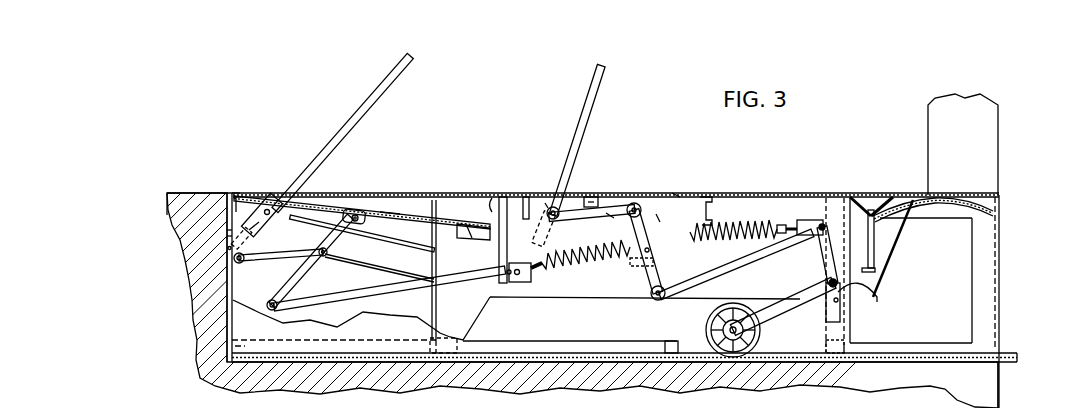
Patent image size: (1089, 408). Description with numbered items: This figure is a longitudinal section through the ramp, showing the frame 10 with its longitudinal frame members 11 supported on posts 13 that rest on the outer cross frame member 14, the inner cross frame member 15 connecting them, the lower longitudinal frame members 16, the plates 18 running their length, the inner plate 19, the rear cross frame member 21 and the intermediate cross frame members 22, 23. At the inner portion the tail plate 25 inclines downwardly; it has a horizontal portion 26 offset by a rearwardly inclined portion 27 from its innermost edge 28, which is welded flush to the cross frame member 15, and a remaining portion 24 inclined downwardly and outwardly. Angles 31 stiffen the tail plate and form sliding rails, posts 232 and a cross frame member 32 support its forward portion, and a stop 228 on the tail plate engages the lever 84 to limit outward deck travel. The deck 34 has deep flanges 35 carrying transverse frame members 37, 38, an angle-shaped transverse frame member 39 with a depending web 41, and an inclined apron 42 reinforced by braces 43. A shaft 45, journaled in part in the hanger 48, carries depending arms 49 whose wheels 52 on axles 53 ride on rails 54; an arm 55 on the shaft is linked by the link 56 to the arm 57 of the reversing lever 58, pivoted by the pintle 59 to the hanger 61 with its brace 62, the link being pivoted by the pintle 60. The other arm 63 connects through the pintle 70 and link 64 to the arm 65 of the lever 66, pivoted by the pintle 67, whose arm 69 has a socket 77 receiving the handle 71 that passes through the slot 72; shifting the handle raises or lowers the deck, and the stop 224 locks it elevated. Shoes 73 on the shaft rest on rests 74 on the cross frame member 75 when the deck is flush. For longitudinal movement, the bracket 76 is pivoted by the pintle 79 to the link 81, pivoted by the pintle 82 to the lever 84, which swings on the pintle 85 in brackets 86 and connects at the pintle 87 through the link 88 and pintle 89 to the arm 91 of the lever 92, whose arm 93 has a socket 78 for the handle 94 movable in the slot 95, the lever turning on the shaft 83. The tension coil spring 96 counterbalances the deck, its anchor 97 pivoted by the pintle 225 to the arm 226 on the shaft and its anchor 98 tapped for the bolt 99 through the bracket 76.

The frame 10 is at (988, 240).
The longitudinal frame members 11 is at (952, 213).
The posts 13 is at (984, 313).
The cross frame member 14 is at (1001, 377).
The inner cross frame member 15 is at (222, 192).
The longitudinal frame members 16 is at (940, 343).
The plates 18 is at (303, 333).
The inner plate 19 is at (222, 259).
The cross frame member 21 is at (228, 354).
The intermediate cross frame member 22 is at (467, 347).
The intermediate cross frame member 23 is at (676, 347).
The remaining portion of tail plate 24 is at (440, 217).
The tail plate 25 is at (407, 210).
The horizontal portion 26 is at (286, 186).
The rearwardly inclined portion 27 is at (247, 193).
The innermost edge 28 is at (232, 193).
The angles 31 is at (392, 213).
The cross frame member 32 is at (468, 217).
The deck 34 is at (752, 193).
The flanges 35 is at (616, 298).
The transverse frame member 37 is at (492, 213).
The transverse frame member 38 is at (713, 197).
The angle-shaped transverse frame member 39 is at (867, 199).
The web 41 is at (877, 248).
The apron 42 is at (943, 197).
The braces 43 is at (908, 200).
The shaft 45 is at (876, 295).
The hanger 48 is at (832, 210).
The depending arms 49 is at (778, 307).
The wheels 52 is at (760, 344).
The axles 53 is at (733, 334).
The rails 54 is at (1008, 357).
The arm 55 is at (836, 279).
The link 56 is at (740, 261).
The arm 57 is at (651, 274).
The reversing lever 58 is at (648, 212).
The pintle 59 is at (650, 249).
The pintle 60 is at (668, 303).
The hanger 61 is at (676, 192).
The brace 62 is at (632, 261).
The arm 63 is at (659, 217).
The link 64 is at (610, 216).
The arm 65 is at (559, 227).
The lever 66 is at (564, 200).
The pintle 67 is at (549, 192).
The arm 69 is at (540, 268).
The pintle 70 is at (631, 210).
The handle 71 is at (580, 131).
The slot 72 is at (525, 197).
The shoes 73 is at (836, 289).
The rests 74 is at (832, 315).
The cross frame member 75 is at (834, 355).
The bracket 76 is at (505, 244).
The socket 77 is at (547, 203).
The socket 78 is at (224, 216).
The pintle 79 is at (524, 282).
The link 81 is at (383, 290).
The pintle 82 is at (273, 311).
The shaft 83 is at (266, 219).
The lever 84 is at (304, 275).
The pintle 85 is at (356, 204).
The brackets 86 is at (348, 205).
The pintle 87 is at (328, 253).
The link 88 is at (265, 256).
The pintle 89 is at (240, 266).
The arm 91 is at (224, 248).
The lever 92 is at (233, 233).
The arm 93 is at (262, 206).
The handle 94 is at (357, 110).
The slot 95 is at (252, 190).
The tension coil spring 96 is at (730, 225).
The spring anchor 97 is at (769, 226).
The spring anchor 98 is at (556, 269).
The bolt 99 is at (507, 279).
The stop 224 is at (595, 193).
The pintle 225 is at (820, 222).
The arm 226 is at (826, 243).
The stop 228 is at (413, 254).
The posts 232 is at (450, 307).